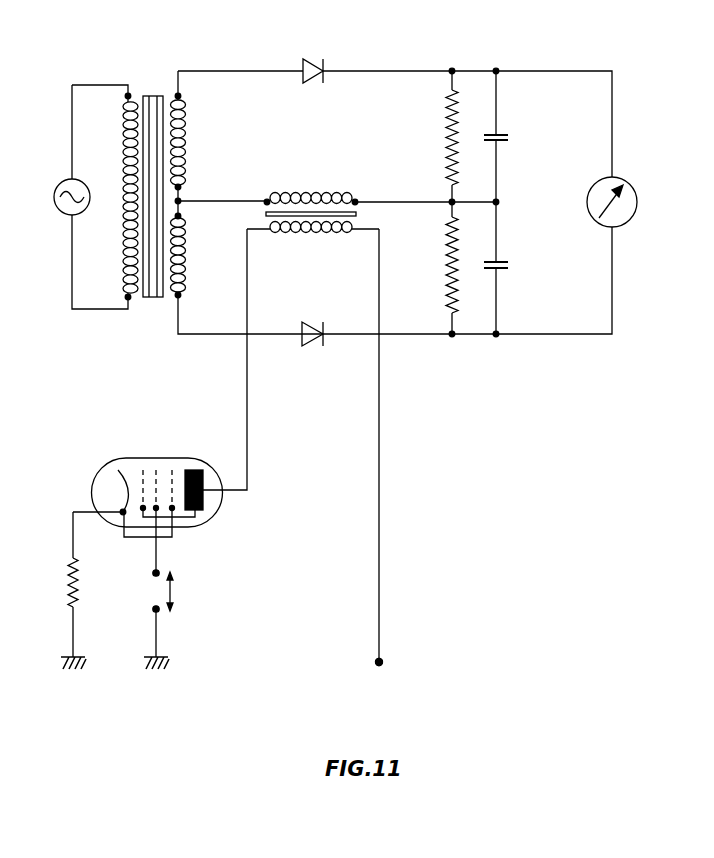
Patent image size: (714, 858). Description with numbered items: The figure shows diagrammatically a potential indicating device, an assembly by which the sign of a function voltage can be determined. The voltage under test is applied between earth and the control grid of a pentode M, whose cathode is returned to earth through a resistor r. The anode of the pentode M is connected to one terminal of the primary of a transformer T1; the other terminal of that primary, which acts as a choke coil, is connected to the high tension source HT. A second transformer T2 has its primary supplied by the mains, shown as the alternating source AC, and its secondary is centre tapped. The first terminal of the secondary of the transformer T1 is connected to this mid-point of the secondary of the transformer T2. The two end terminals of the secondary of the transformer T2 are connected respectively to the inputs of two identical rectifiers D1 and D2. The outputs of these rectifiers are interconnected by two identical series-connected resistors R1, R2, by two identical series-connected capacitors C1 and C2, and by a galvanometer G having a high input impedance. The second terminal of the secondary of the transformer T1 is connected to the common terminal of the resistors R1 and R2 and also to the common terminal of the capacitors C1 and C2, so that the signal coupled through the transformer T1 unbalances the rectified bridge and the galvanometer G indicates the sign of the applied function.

The AC source AC is at (80, 197).
The transformer T2 is at (154, 212).
The transformer T1 is at (313, 203).
The rectifier D1 is at (312, 55).
The rectifier D2 is at (312, 322).
The resistor R1 is at (436, 137).
The resistor R2 is at (436, 265).
The capacitor C1 is at (510, 141).
The capacitor C2 is at (511, 271).
The galvanometer G is at (615, 193).
The pentode M is at (148, 504).
The resistor r is at (65, 590).
The +H.T supply terminal HT is at (407, 662).